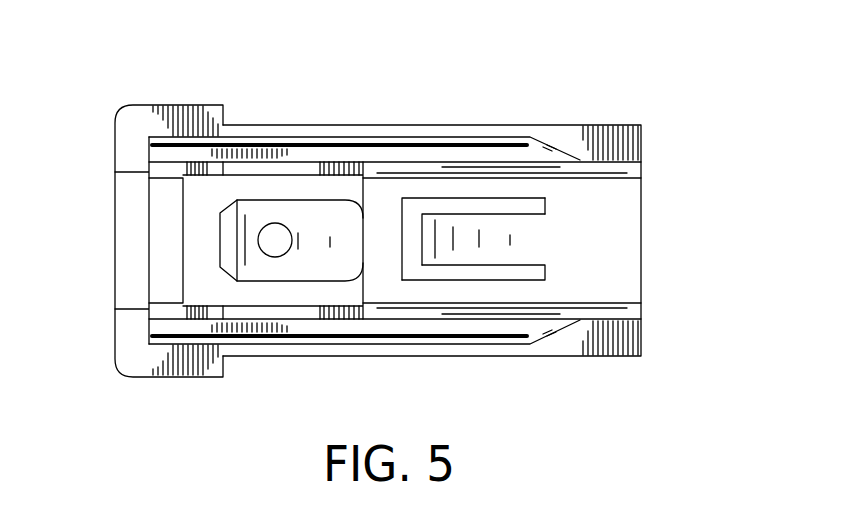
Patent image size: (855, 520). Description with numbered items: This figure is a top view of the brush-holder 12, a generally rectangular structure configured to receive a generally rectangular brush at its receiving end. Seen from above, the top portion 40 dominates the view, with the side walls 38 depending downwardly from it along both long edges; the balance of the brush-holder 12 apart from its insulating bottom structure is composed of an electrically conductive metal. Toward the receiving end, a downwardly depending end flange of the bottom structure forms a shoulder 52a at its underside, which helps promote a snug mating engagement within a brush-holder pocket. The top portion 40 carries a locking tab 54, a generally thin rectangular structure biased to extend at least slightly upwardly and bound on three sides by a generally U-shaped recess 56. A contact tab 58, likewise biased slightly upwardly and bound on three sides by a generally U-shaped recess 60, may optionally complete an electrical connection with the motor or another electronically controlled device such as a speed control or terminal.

The brush-holder 12 is at (455, 85).
The side walls 38 is at (353, 198).
The top portion 40 is at (167, 235).
The shoulder 52a is at (225, 117).
The locking tab 54 is at (465, 232).
The U-shaped recess 56 is at (482, 272).
The contact tab 58 is at (272, 259).
The U-shaped recess 60 is at (285, 188).